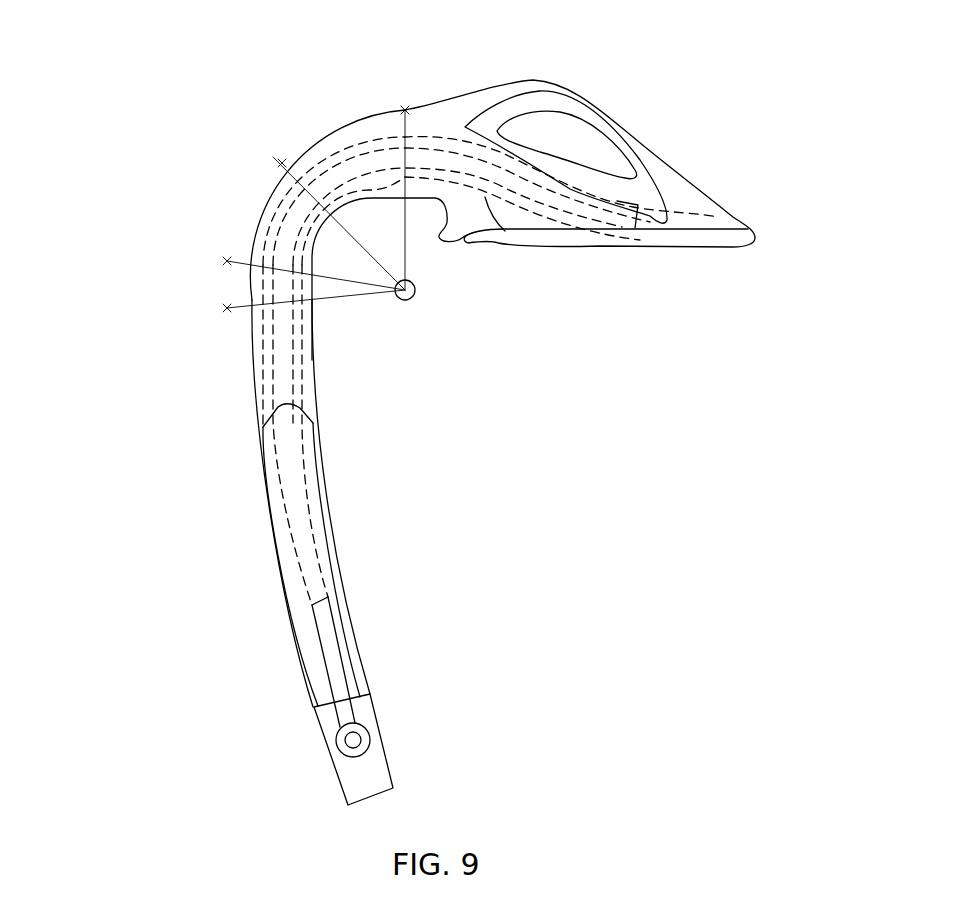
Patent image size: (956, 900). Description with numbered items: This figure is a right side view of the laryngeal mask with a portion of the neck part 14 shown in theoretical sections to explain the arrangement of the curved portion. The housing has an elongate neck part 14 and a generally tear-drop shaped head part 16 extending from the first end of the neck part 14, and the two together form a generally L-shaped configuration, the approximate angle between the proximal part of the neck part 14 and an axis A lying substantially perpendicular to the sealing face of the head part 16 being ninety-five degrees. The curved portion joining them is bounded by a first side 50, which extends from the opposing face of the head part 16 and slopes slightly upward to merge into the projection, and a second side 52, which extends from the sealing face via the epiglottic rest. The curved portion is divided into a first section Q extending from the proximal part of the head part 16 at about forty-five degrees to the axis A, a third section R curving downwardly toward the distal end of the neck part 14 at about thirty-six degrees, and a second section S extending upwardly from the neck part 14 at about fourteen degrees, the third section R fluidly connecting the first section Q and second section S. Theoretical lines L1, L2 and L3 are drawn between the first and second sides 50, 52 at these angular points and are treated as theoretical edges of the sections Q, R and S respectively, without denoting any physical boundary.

The neck part 14 is at (195, 467).
The head part 16 is at (609, 68).
The first side 50 is at (311, 151).
The second side 52 is at (353, 218).
The axis A is at (407, 233).
The first section Q is at (361, 113).
The third section R is at (219, 259).
The second section S is at (304, 297).
The theoretical line L1 is at (303, 190).
The theoretical line L2 is at (250, 266).
The theoretical line L3 is at (270, 298).